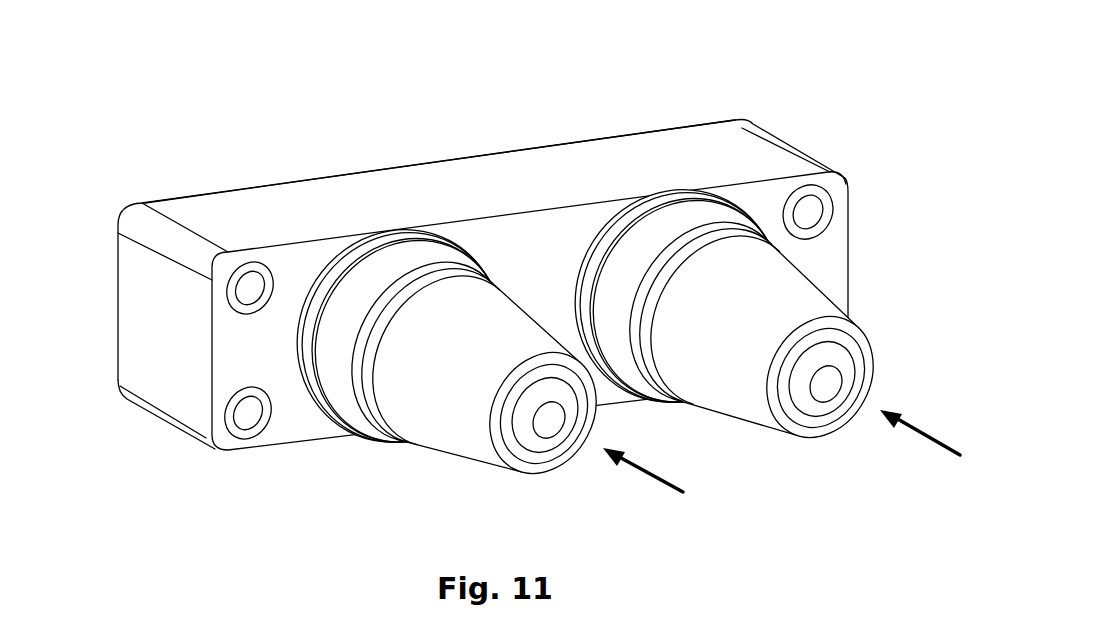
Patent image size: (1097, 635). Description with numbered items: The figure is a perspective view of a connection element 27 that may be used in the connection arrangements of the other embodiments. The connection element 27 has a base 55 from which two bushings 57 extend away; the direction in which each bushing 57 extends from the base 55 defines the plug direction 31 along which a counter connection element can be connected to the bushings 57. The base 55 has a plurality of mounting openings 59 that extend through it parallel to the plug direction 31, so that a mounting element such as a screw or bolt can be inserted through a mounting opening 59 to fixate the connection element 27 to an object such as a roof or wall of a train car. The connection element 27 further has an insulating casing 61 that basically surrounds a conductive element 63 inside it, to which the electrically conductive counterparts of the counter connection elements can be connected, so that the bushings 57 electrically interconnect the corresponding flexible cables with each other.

The connection element 27 is at (500, 276).
The base 55 is at (483, 290).
The insulating casing 61 is at (606, 156).
The mounting openings 59 is at (249, 292).
The bushings 57 is at (577, 333).
The conductive element 63 is at (817, 410).
The plug direction 31 is at (650, 480).